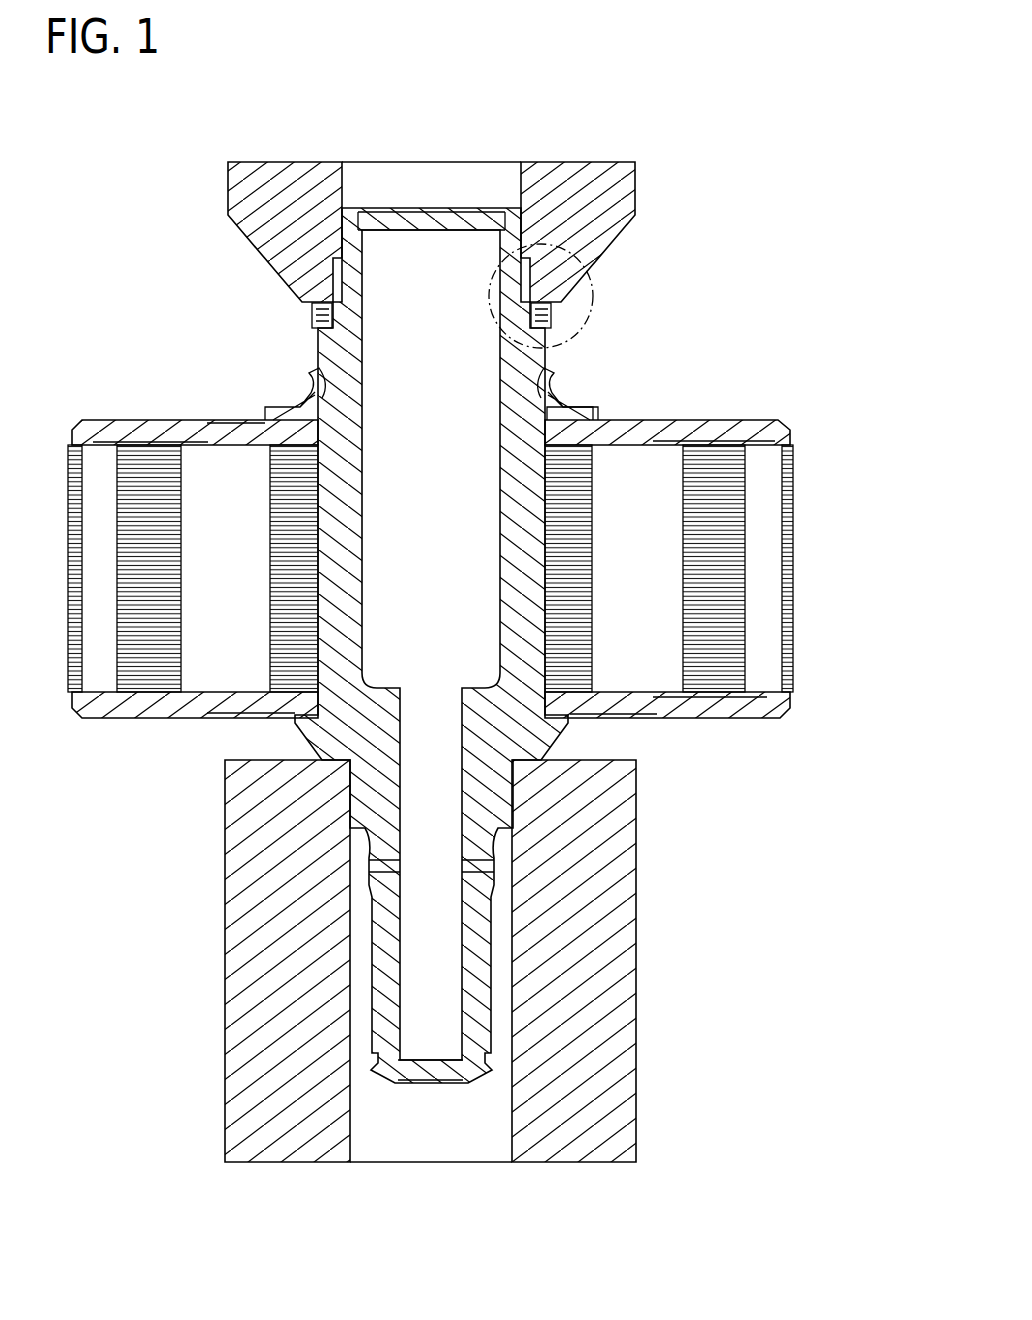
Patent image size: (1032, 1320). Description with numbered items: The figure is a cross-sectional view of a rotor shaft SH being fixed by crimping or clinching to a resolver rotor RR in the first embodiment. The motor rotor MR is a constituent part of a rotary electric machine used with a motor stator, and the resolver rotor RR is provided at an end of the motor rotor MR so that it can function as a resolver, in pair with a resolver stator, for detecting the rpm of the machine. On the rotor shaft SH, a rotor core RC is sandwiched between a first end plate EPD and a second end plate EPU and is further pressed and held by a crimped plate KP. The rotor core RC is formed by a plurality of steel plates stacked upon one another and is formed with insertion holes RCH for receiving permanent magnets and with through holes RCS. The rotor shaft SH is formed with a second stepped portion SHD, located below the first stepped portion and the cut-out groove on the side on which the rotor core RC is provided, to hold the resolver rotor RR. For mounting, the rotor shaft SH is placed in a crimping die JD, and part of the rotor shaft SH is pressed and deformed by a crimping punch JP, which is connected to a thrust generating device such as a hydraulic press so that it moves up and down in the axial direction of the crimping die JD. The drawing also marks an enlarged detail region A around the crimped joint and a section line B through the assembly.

The crimping punch JP is at (632, 170).
The crimping die JD is at (636, 1090).
The rotor shaft SH is at (308, 748).
The second stepped portion SHD is at (312, 315).
The resolver rotor RR is at (551, 312).
The enlarged detail portion A is at (592, 292).
The section line B- B is at (137, 203).
The motor rotor MR is at (471, 540).
The second end plate EPU is at (670, 418).
The first end plate EPD is at (714, 718).
The crimped plate KP is at (283, 412).
The rotor core RC is at (471, 598).
The through holes RCS is at (668, 634).
The insertion holes RCH is at (777, 478).